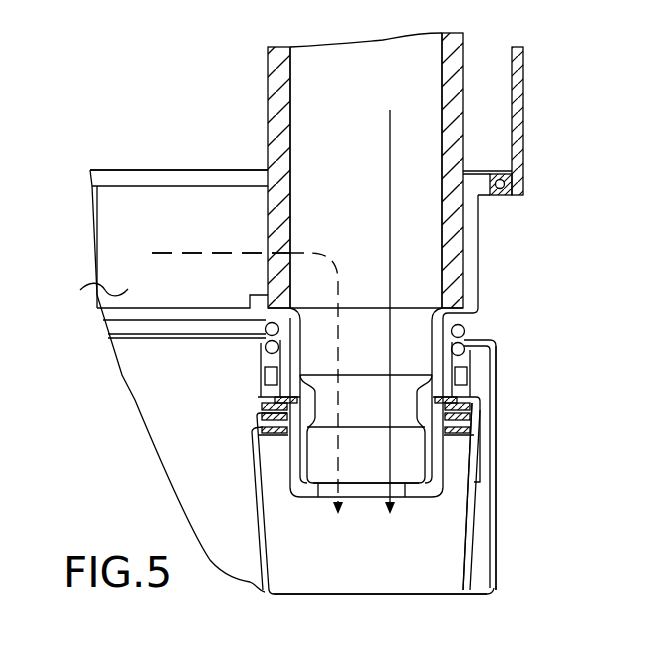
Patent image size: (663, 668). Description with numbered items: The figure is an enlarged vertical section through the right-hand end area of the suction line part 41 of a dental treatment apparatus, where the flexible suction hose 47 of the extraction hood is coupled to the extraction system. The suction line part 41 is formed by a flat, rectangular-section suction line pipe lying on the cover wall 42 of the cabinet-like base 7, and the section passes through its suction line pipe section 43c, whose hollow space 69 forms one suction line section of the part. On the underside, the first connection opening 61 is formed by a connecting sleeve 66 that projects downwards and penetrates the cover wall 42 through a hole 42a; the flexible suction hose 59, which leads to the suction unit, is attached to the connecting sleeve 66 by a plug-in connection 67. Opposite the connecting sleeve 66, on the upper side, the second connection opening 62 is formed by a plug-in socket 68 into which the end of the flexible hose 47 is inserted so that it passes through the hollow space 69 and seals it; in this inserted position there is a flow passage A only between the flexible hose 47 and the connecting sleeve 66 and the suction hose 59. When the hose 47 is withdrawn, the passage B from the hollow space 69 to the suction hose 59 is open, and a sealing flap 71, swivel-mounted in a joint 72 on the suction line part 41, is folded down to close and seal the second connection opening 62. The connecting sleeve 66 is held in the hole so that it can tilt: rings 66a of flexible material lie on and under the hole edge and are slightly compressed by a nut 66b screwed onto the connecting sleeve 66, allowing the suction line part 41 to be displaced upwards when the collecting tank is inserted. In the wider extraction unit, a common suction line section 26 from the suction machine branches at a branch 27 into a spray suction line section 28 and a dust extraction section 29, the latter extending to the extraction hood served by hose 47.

The cabinet-like base 7 is at (497, 480).
The common suction line section 26 is at (447, 575).
The branch 27 is at (246, 222).
The spray suction line section 28 is at (158, 381).
The dust extraction section 29 is at (427, 87).
The suction line part 41 is at (90, 170).
The suction line pipe section 43c is at (480, 304).
The cover wall 42 is at (142, 338).
The hole 42a is at (262, 342).
The flexible suction hose 47 is at (452, 268).
The flexible suction hose 59 is at (470, 512).
The first connection opening 61 is at (328, 492).
The second connection opening 62 is at (447, 178).
The connecting sleeve 66 is at (268, 483).
The rings 66a is at (470, 347).
The nut 66b is at (470, 363).
The plug-in connection 67 is at (482, 411).
The plug-in connection 68 is at (257, 158).
The hollow space 69 is at (140, 227).
The sealing flap 71 is at (523, 75).
The joint 72 is at (512, 197).
The flow passage A is at (388, 133).
The passage B is at (313, 248).